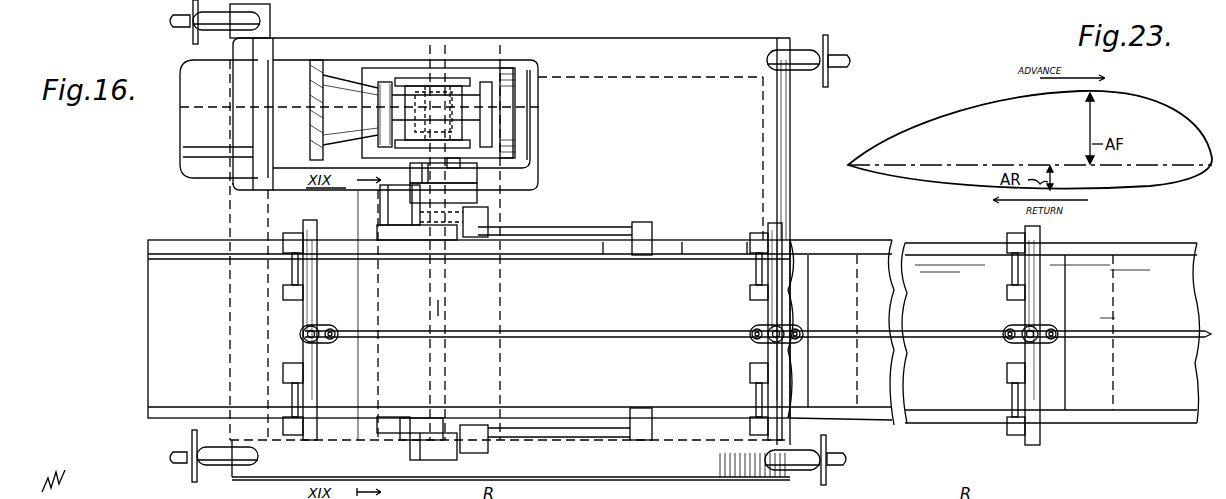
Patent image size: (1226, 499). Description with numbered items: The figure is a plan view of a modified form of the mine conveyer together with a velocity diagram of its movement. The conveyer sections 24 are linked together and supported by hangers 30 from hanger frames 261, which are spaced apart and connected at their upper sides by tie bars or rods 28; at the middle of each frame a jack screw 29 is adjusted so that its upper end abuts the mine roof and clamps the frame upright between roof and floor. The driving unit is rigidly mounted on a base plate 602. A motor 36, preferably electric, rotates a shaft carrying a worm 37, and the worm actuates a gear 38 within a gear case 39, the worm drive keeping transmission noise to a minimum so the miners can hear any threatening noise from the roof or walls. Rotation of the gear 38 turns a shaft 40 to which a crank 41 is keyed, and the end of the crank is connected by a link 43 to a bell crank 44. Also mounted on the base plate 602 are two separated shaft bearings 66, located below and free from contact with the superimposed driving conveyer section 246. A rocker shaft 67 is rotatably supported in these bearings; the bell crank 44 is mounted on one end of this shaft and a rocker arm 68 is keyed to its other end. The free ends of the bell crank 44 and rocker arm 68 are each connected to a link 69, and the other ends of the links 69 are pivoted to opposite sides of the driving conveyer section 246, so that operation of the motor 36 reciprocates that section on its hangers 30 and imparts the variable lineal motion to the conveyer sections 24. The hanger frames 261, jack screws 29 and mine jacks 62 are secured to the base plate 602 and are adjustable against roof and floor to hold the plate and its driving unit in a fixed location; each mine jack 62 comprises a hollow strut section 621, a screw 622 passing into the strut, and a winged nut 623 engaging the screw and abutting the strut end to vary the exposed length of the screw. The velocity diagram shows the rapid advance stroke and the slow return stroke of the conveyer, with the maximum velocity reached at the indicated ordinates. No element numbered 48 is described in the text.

The conveyer section 24 is at (938, 423).
The tie bar 28 is at (618, 331).
The jack screw 29 is at (315, 342).
The hanger 30 is at (749, 289).
The motor 36 is at (188, 126).
The worm 37 is at (436, 68).
The gear 38 is at (518, 97).
The gear case 39 is at (398, 84).
The shaft 40 is at (477, 157).
The crank 41 is at (478, 180).
The link 43 is at (380, 201).
The bell crank 44 is at (380, 219).
The shaft 48 is at (467, 197).
The mine jack 62 is at (218, 30).
The shaft bearing 66 is at (377, 234).
The rocker shaft 67 is at (444, 312).
The rocker arm 68 is at (458, 460).
The link 69 is at (574, 228).
The driving conveyer section 246 is at (148, 333).
The frame 261 is at (314, 300).
The base plate 602 is at (358, 40).
The hollow strut section 621 is at (798, 48).
The screw 622 is at (847, 62).
The winged nut 623 is at (833, 47).